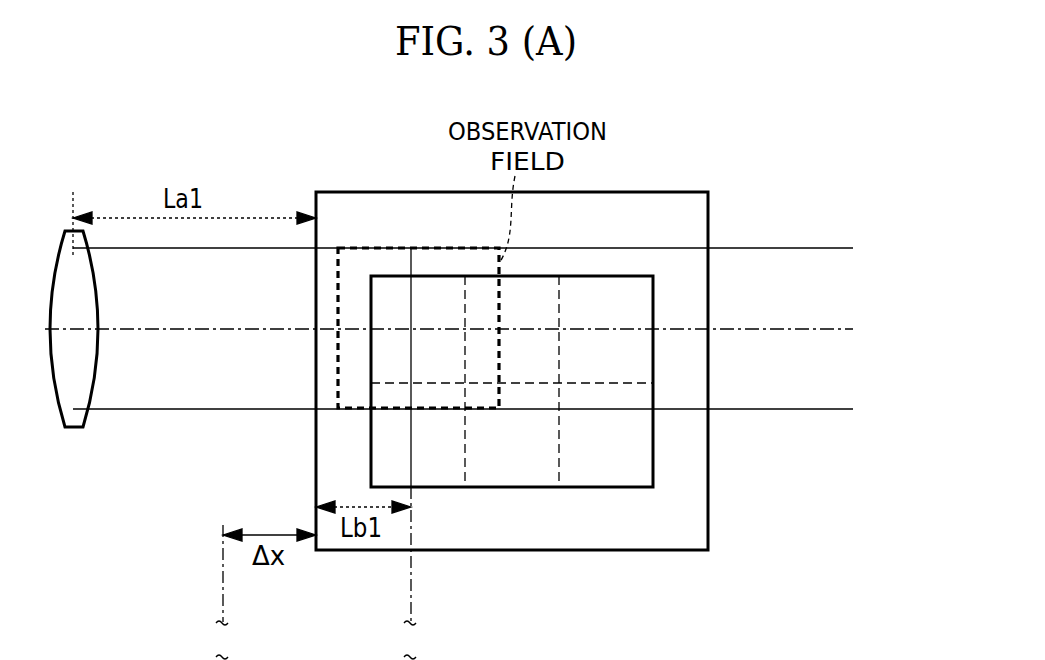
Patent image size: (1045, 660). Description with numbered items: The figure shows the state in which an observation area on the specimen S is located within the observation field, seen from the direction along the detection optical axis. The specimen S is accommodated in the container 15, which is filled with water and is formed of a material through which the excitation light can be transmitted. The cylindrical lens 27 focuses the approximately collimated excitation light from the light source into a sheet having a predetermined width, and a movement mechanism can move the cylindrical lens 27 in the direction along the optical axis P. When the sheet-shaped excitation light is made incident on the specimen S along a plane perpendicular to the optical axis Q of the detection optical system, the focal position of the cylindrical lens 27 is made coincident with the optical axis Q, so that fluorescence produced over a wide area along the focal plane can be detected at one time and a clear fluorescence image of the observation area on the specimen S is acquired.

The container 15 is at (389, 192).
The cylindrical lens 27 is at (73, 429).
The specimen S is at (603, 488).
The optical axis P is at (810, 331).
The optical axis Q is at (410, 585).